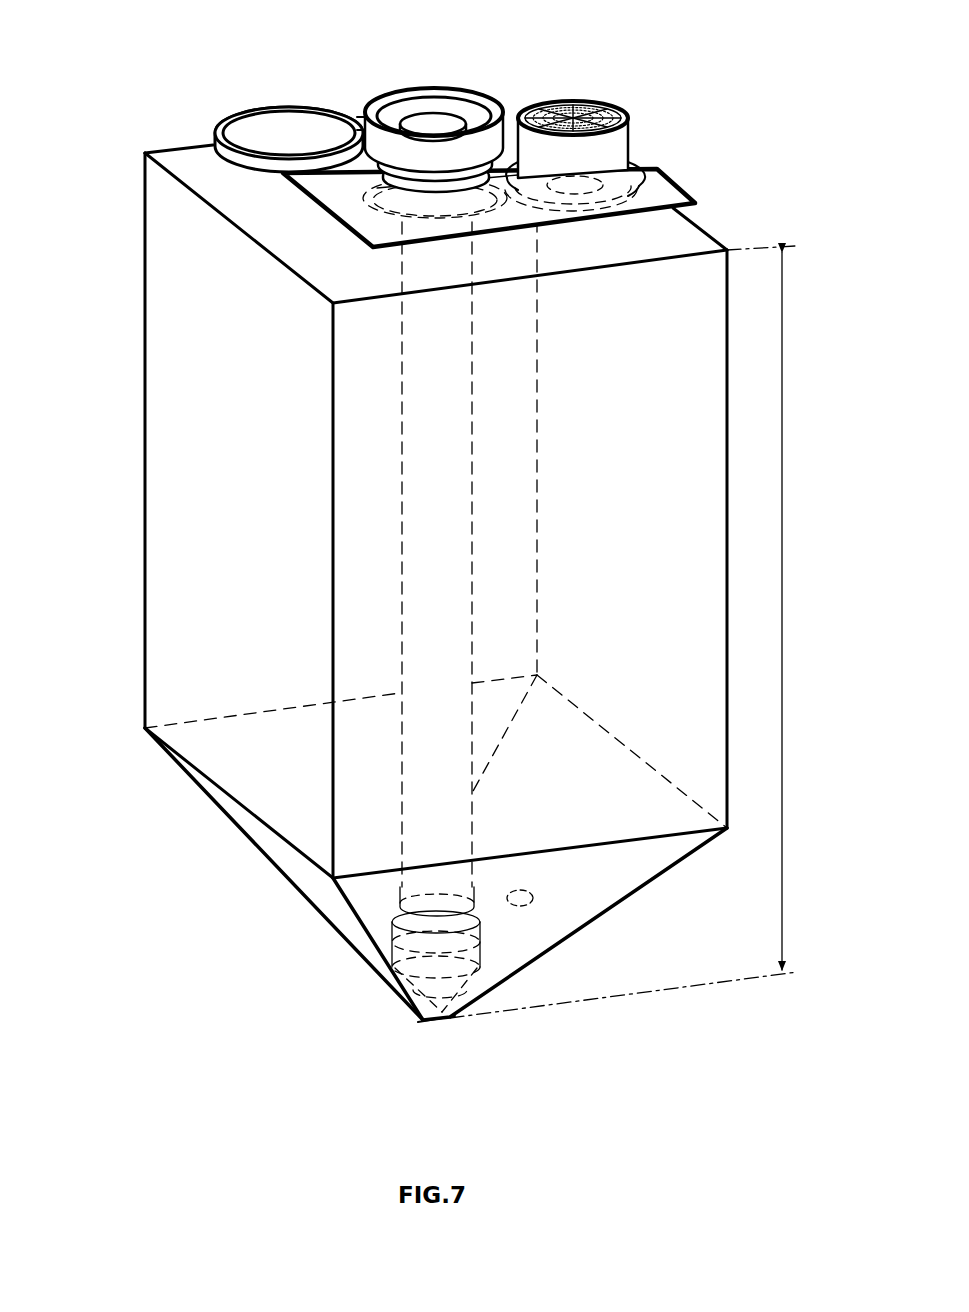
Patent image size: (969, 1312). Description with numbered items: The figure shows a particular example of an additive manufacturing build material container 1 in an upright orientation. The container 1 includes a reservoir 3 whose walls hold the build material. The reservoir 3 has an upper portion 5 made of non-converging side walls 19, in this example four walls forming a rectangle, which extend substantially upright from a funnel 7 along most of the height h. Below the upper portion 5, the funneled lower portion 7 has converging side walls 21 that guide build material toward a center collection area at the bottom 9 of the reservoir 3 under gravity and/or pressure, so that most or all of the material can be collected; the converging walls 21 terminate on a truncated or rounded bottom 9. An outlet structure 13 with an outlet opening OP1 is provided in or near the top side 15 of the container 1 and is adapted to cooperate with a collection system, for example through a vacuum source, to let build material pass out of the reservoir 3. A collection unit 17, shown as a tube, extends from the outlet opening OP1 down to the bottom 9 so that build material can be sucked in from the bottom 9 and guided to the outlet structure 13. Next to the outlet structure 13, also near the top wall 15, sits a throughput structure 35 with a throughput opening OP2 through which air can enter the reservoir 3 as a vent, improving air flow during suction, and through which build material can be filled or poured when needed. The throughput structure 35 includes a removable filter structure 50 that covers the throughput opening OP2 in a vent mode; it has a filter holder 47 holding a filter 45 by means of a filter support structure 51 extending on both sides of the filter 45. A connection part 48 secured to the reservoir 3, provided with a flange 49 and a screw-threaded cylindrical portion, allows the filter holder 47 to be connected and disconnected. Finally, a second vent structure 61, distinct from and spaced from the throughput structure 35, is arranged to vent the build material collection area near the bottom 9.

The build material container 1 is at (737, 210).
The reservoir 3 is at (182, 420).
The upper portion 5 is at (130, 617).
The funnel 7 is at (377, 958).
The bottom 9 is at (420, 1027).
The outlet structure 13 is at (434, 103).
The top side 15 is at (190, 172).
The collection unit 17 is at (473, 488).
The non-converging side wall 19 is at (182, 537).
The converging side wall 21 is at (267, 833).
The throughput structure 35 is at (620, 93).
The filter 45 is at (565, 103).
The filter holder 47 is at (595, 102).
The connection part 48 is at (645, 162).
The flange 49 is at (618, 182).
The removable filter structure 50 is at (633, 102).
The filter support structure 51 is at (603, 100).
The second vent structure 61 is at (524, 903).
The outlet opening OP1 is at (423, 126).
The throughput opening OP2 is at (577, 180).
The height h is at (631, 632).